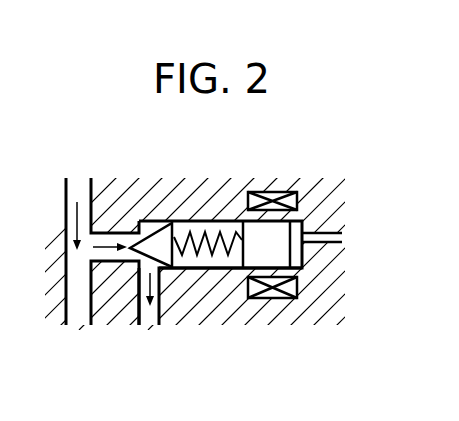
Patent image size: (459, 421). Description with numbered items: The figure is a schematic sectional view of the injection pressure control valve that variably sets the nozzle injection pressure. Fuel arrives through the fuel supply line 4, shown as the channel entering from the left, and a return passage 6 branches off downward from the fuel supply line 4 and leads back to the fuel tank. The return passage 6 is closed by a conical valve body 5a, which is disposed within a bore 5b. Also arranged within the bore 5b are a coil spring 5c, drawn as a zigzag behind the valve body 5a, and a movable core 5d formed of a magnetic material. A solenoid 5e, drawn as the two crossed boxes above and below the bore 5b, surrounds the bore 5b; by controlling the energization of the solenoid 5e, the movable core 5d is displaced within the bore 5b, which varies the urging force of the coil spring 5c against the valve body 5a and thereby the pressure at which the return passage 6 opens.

The fuel supply line 4 is at (92, 198).
The valve body 5a is at (157, 236).
The bore 5b is at (220, 266).
The coil spring 5c is at (208, 236).
The movable core 5d is at (280, 238).
The solenoid 5e is at (277, 299).
The return passage 6 is at (158, 308).